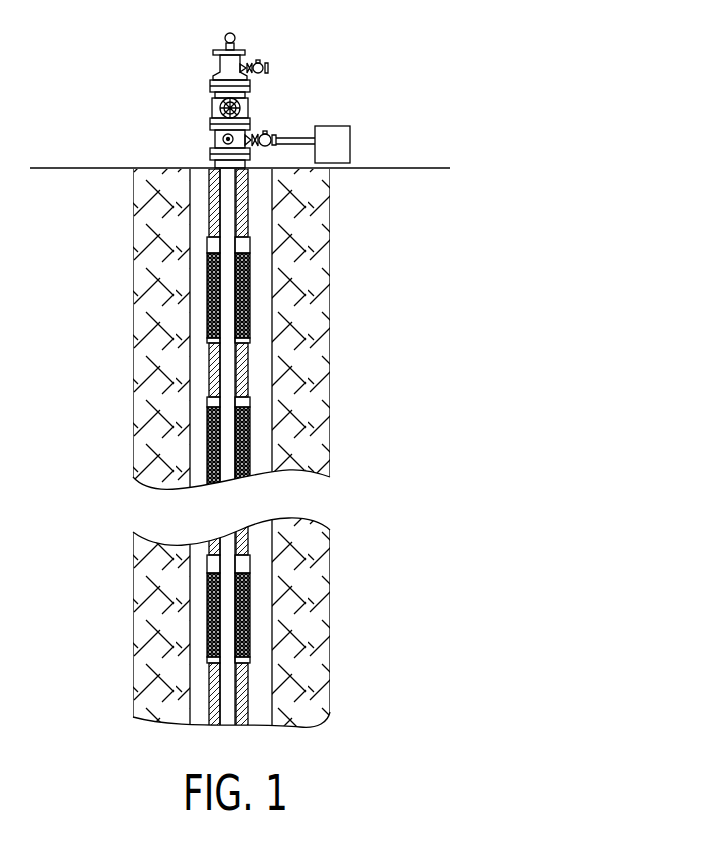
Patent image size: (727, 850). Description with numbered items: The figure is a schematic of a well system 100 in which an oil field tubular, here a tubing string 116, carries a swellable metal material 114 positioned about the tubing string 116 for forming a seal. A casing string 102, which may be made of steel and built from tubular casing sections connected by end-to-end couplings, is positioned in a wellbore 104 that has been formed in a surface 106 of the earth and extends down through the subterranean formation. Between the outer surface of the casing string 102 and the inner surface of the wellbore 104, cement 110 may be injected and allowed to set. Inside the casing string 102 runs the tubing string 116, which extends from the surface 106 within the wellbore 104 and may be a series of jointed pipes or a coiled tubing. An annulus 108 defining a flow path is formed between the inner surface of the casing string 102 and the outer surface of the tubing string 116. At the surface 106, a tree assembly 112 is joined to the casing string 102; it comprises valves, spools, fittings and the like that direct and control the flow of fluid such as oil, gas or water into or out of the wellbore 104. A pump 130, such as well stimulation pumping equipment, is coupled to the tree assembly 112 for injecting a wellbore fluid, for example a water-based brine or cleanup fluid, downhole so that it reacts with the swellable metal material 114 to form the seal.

The well system 100 is at (518, 97).
The casing string 102 is at (208, 270).
The wellbore 104 is at (204, 199).
The surface 106 is at (441, 167).
The annulus 108 is at (209, 395).
The cement 110 is at (263, 435).
The tree assembly 112 is at (250, 108).
The swellable metal material 114 is at (250, 308).
The tubing string 116 is at (248, 385).
The pump 130 is at (352, 135).